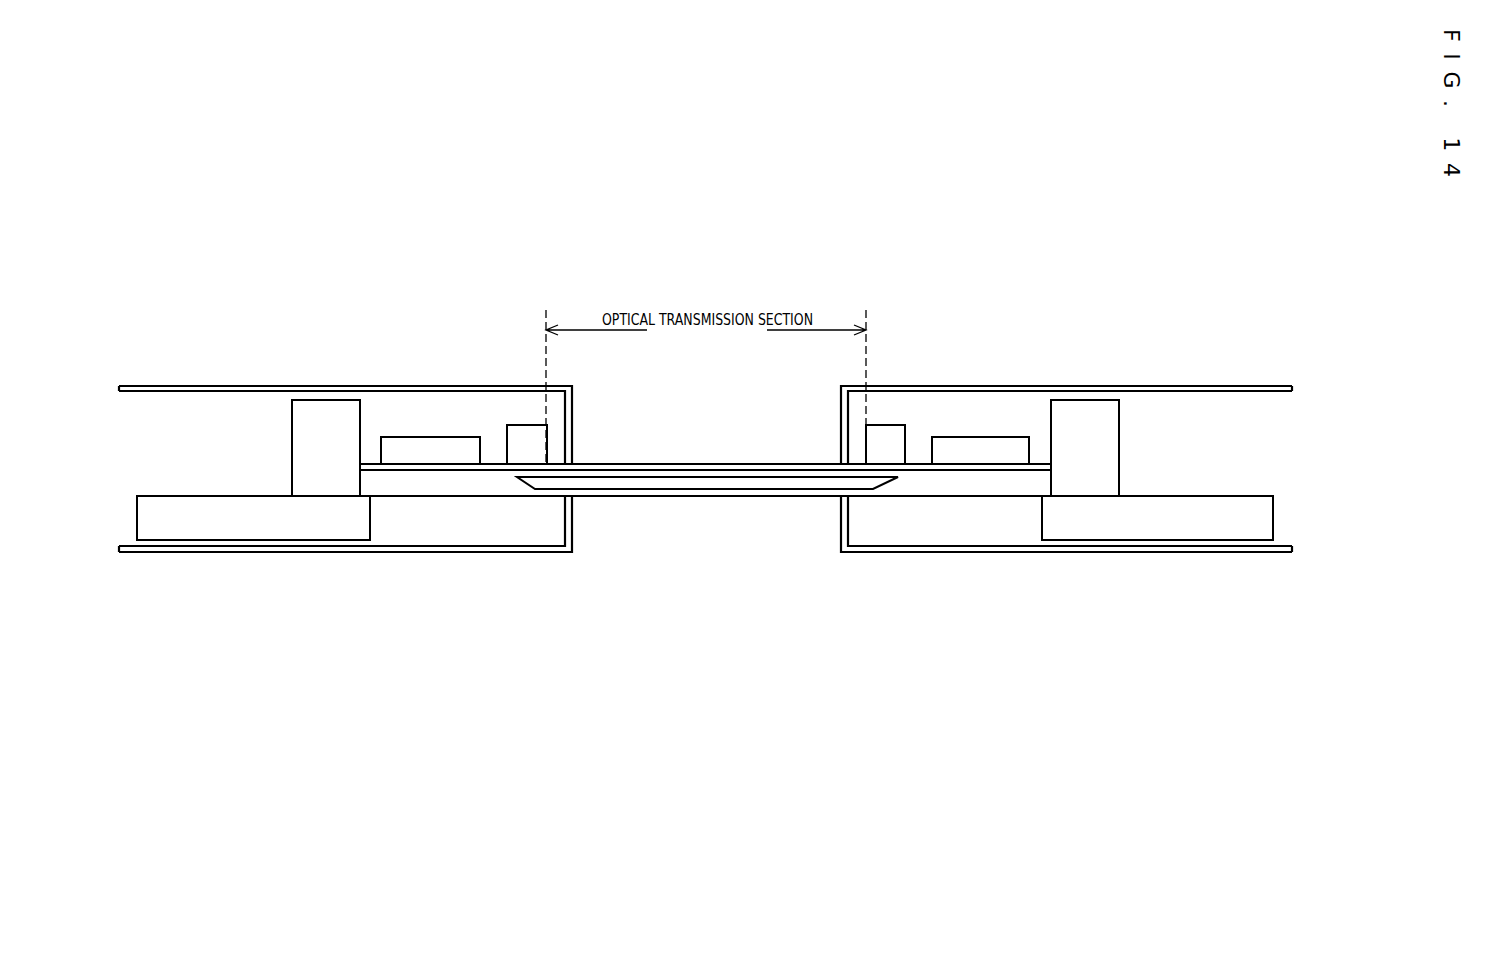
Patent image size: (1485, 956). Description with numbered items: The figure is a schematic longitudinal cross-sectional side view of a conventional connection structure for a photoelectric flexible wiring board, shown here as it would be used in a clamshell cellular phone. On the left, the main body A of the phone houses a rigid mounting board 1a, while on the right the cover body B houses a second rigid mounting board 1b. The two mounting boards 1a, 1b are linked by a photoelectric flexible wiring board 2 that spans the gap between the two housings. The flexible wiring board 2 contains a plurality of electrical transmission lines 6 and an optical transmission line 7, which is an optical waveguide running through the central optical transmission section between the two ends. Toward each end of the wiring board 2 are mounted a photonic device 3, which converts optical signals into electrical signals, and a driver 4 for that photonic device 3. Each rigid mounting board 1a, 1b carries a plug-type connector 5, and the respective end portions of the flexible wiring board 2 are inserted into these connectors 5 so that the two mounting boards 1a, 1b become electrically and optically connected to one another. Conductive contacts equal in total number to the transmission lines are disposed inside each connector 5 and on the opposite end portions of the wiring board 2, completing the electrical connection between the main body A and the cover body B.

The main body A is at (284, 372).
The cover body B is at (1157, 372).
The rigid mounting board 1a is at (214, 524).
The rigid mounting board 1b is at (1197, 522).
The photoelectric flexible wiring board 2 is at (689, 506).
The photonic device 3 is at (525, 448).
The driver 4 is at (436, 450).
The plug-type connector 5 is at (326, 415).
The electrical transmission line 6 is at (720, 462).
The optical transmission line 7 is at (742, 483).